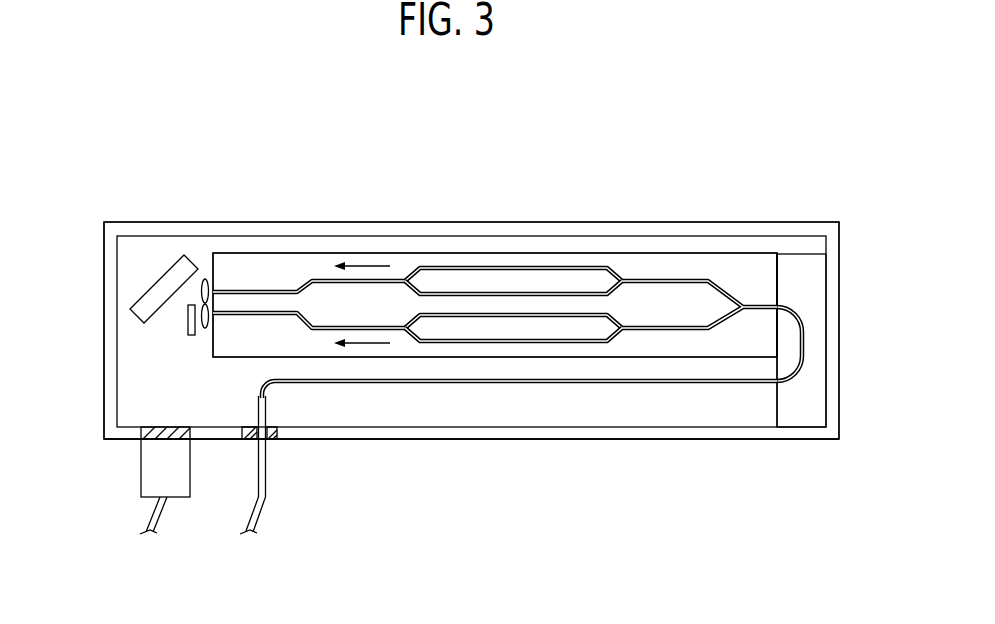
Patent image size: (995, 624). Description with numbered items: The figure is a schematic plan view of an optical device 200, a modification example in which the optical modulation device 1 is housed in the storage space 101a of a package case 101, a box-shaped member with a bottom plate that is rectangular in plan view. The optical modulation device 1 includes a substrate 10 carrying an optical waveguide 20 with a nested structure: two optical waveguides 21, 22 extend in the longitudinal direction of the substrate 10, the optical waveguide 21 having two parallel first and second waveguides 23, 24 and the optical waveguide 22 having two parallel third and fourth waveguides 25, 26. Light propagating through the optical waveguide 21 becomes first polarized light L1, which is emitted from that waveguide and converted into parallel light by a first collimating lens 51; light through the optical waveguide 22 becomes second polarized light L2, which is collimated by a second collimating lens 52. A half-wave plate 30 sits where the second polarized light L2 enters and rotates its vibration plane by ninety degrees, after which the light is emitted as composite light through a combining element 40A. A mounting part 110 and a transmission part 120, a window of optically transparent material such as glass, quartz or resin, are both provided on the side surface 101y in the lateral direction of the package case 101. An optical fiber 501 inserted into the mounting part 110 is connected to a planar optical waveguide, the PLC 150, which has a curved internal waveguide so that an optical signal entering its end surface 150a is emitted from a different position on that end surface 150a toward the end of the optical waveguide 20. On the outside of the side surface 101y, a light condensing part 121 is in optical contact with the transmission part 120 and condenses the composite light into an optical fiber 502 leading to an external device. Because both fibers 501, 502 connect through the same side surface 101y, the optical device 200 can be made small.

The optical modulation device 1 is at (562, 379).
The substrate 10 is at (693, 263).
The optical waveguide 20 is at (747, 294).
The optical waveguide 21 is at (247, 290).
The optical waveguide 22 is at (280, 311).
The first waveguide 23 is at (441, 266).
The second waveguide 24 is at (487, 292).
The third waveguide 25 is at (533, 313).
The fourth waveguide 26 is at (587, 339).
The half-wave plate 30 is at (187, 323).
The combining element 40A is at (152, 298).
The first collimating lens 51 is at (205, 279).
The second collimating lens 52 is at (205, 328).
The package case 101 is at (707, 438).
The storage space 101a is at (637, 419).
The side surface 101y is at (440, 441).
The mounting part 110 is at (270, 447).
The transmission part 120 is at (157, 441).
The light condensing part 121 is at (178, 487).
The planar optical waveguide (PLC) 150 is at (803, 263).
The end surface 150a is at (775, 407).
The optical device 200 is at (725, 140).
The optical fiber 501 is at (266, 514).
The optical fiber 502 is at (152, 509).
The first polarized light L1 is at (366, 264).
The second polarized light L2 is at (361, 346).